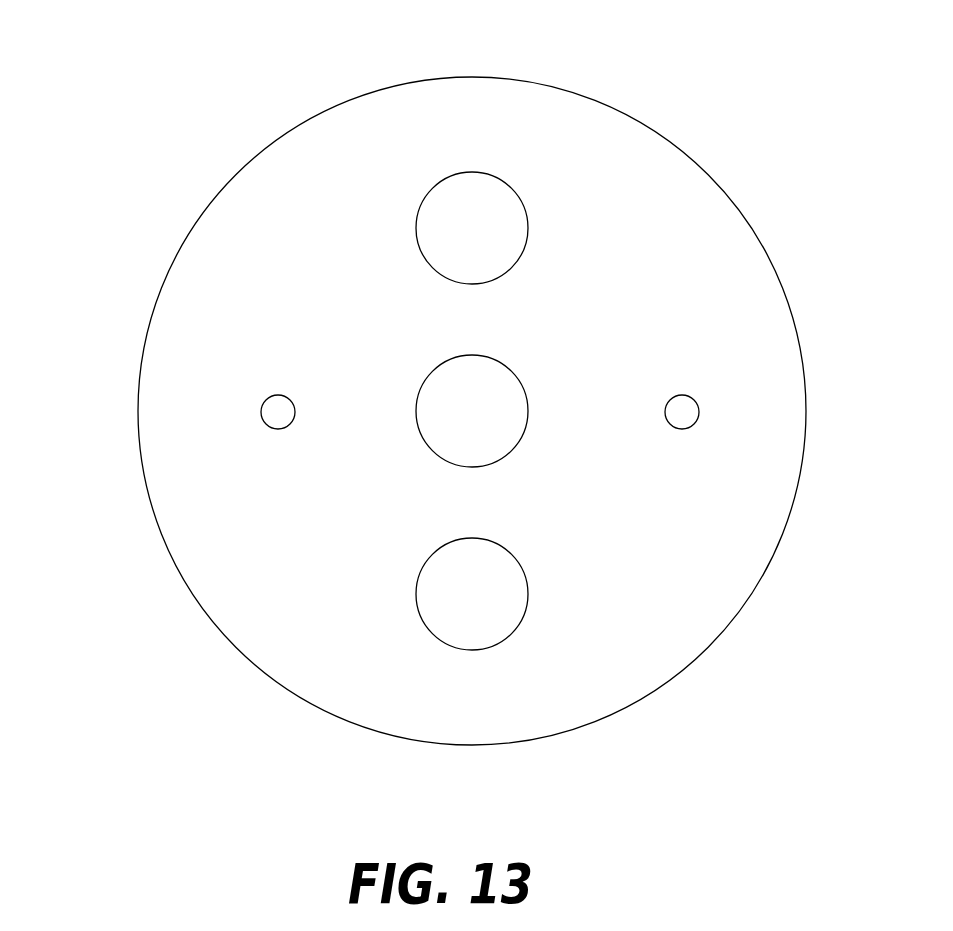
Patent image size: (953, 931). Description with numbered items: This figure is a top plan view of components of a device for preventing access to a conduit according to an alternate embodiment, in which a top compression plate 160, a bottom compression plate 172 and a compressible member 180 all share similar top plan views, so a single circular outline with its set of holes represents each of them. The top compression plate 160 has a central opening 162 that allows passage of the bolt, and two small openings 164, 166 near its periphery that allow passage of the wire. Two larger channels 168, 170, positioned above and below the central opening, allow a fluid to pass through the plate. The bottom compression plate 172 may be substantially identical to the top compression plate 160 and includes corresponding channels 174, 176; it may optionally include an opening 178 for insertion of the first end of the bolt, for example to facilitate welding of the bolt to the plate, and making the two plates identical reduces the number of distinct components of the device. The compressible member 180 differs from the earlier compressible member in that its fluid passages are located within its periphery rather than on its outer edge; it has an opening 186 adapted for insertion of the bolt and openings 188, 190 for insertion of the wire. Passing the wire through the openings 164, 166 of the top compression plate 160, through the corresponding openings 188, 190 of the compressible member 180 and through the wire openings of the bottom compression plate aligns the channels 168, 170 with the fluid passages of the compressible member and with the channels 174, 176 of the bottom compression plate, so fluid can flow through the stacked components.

The top compression plate 160 is at (505, 411).
The bottom compression plate 172 is at (505, 411).
The compressible member 180 is at (714, 172).
The channel 168 is at (495, 152).
The channel 174 is at (495, 152).
The opening 162 is at (564, 424).
The opening 178 is at (564, 424).
The opening 186 is at (519, 448).
The channel 170 is at (564, 658).
The channel 176 is at (564, 658).
The opening 164 is at (169, 499).
The opening 188 is at (264, 426).
The opening 166 is at (800, 395).
The opening 190 is at (703, 412).